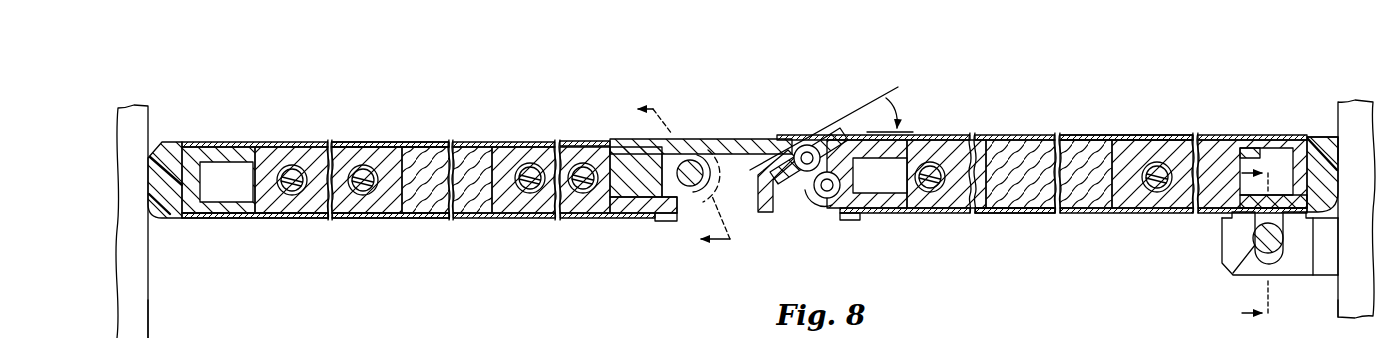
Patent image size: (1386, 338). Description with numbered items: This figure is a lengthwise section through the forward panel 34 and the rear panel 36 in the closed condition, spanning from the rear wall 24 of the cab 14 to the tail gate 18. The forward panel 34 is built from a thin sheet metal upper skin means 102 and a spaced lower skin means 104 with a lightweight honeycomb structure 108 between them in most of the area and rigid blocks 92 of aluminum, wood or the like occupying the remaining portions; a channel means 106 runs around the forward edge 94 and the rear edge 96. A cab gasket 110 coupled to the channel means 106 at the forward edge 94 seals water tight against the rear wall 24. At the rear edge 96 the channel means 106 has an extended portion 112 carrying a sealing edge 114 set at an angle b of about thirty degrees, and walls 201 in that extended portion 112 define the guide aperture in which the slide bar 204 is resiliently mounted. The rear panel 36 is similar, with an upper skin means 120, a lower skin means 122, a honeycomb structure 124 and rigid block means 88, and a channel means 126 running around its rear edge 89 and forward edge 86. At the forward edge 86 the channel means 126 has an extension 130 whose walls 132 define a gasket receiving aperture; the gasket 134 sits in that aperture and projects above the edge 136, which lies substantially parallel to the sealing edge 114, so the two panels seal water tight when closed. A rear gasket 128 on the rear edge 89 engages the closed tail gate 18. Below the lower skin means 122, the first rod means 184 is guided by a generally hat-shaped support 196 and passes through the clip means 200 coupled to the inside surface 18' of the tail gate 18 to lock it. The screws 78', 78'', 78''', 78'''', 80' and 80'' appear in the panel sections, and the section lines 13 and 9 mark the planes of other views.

The cab 14 is at (134, 107).
The tail gate 18 is at (1356, 173).
The inside surface of the tail gate 18' is at (1317, 317).
The rear wall of the cab 24 is at (150, 317).
The forward panel 34 is at (473, 142).
The rear panel 36 is at (1073, 135).
The screw 78' is at (285, 143).
The screw 78'' is at (354, 137).
The screw 78''' is at (526, 138).
The screw 78'''' is at (589, 126).
The screw 80' is at (947, 139).
The screw 80'' is at (1175, 134).
The forward edge of the rear panel 86 is at (840, 222).
The rigid block means 88 is at (948, 204).
The rear edge of the rear panel 89 is at (1313, 136).
The rigid blocks 92 is at (297, 204).
The forward edge 94 is at (200, 219).
The rear edge 96 is at (673, 220).
The upper skin means 102 is at (380, 142).
The lower skin means 104 is at (350, 218).
The channel means 106 is at (228, 208).
The honeycomb structure 108 is at (430, 218).
The cab gasket 110 is at (152, 152).
The extended portion 112 is at (693, 152).
The sealing edge 114 is at (797, 143).
The upper skin means 120 is at (1098, 136).
The lower skin means 122 is at (1017, 214).
The honeycomb structure 124 is at (1020, 157).
The channel means 126 is at (1257, 136).
The rear gasket 128 is at (1330, 136).
The extension 130 is at (837, 143).
The walls 132 is at (810, 190).
The gasket 134 is at (817, 198).
The edge 136 is at (705, 188).
The first rod means 184 is at (1233, 273).
The hat-shaped support 196 is at (1224, 225).
The clip means 200 is at (1338, 275).
The walls 201 is at (687, 160).
The slide bar 204 is at (697, 200).
The section line 13 is at (675, 175).
The section line 9 is at (1245, 245).
The angle b is at (831, 128).